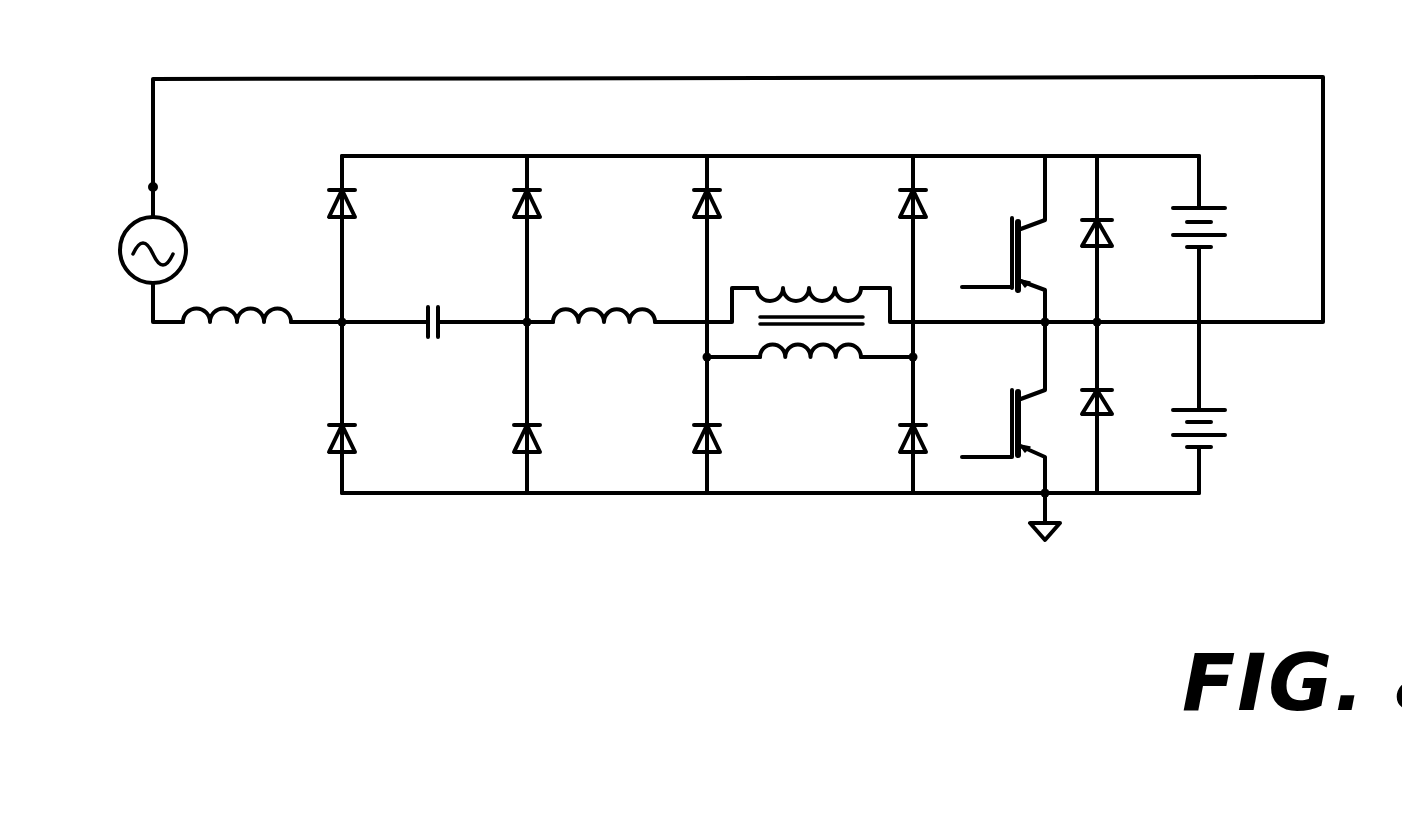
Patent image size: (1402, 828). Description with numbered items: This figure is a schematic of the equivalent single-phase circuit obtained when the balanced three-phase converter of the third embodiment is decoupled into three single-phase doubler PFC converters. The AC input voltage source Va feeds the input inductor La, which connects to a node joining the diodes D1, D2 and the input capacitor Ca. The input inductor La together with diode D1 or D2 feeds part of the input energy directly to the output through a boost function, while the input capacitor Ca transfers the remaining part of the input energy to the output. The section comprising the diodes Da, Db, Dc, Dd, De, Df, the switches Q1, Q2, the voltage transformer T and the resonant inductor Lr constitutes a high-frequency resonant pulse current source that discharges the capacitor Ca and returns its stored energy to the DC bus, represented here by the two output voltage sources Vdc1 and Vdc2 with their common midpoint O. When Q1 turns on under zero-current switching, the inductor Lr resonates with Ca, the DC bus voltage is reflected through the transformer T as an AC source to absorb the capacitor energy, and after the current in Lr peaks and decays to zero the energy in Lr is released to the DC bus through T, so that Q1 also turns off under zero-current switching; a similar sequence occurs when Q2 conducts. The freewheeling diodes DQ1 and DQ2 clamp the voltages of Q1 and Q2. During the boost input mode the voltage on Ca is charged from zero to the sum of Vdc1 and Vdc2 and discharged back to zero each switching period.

The input AC voltage source Va is at (128, 250).
The input inductor La is at (237, 349).
The diode D1 is at (319, 217).
The diode D2 is at (366, 454).
The input capacitor Ca is at (433, 350).
The diode Da is at (502, 218).
The diode Db is at (553, 454).
The resonant inductor Lr is at (604, 294).
The diode Dc is at (730, 228).
The diode Dd is at (738, 454).
The voltage transformer T is at (810, 307).
The diode De is at (890, 217).
The diode Df is at (890, 442).
The switch Q1 is at (1003, 239).
The switch Q2 is at (1003, 407).
The freewheeling diode DQ1 is at (1129, 256).
The freewheeling diode DQ2 is at (1129, 426).
The DC output voltage source Vdc1 is at (1241, 236).
The DC output voltage source Vdc2 is at (1242, 437).
The neutral point O is at (1056, 531).